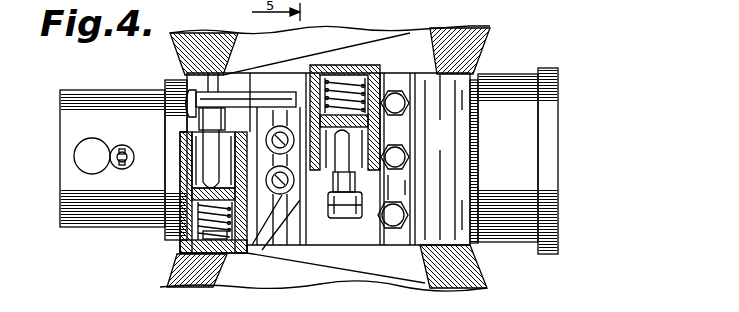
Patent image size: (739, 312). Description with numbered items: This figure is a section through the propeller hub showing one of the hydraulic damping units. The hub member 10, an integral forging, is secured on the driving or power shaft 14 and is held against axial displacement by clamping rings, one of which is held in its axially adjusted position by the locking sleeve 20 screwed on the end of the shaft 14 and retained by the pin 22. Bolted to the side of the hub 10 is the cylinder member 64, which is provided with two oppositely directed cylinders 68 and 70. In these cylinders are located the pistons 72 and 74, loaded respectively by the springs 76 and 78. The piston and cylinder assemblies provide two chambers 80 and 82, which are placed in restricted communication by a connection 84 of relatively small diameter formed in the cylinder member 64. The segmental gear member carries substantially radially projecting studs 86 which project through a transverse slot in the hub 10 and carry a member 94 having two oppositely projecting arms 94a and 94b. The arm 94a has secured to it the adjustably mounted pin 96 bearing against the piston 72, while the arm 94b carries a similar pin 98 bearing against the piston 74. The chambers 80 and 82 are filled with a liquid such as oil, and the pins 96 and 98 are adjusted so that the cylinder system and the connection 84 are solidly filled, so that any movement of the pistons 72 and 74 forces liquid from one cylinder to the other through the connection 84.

The hub member 10 is at (478, 28).
The driving or power shaft 14 is at (553, 137).
The locking sleeve 20 is at (62, 193).
The pin 22 is at (112, 160).
The cylinder member 64 is at (223, 257).
The cylinder 68 is at (376, 133).
The cylinder 70 is at (182, 198).
The piston 72 is at (380, 138).
The piston 74 is at (186, 178).
The spring 76 is at (368, 70).
The spring 78 is at (182, 242).
The chamber 80 is at (346, 85).
The chamber 82 is at (183, 265).
The connection 84 is at (293, 97).
The studs 86 is at (277, 195).
The member 94 is at (278, 195).
The arm 94a is at (358, 212).
The arm 94b is at (262, 95).
The adjustably mounted pin 96 is at (345, 177).
The pin 98 is at (208, 148).